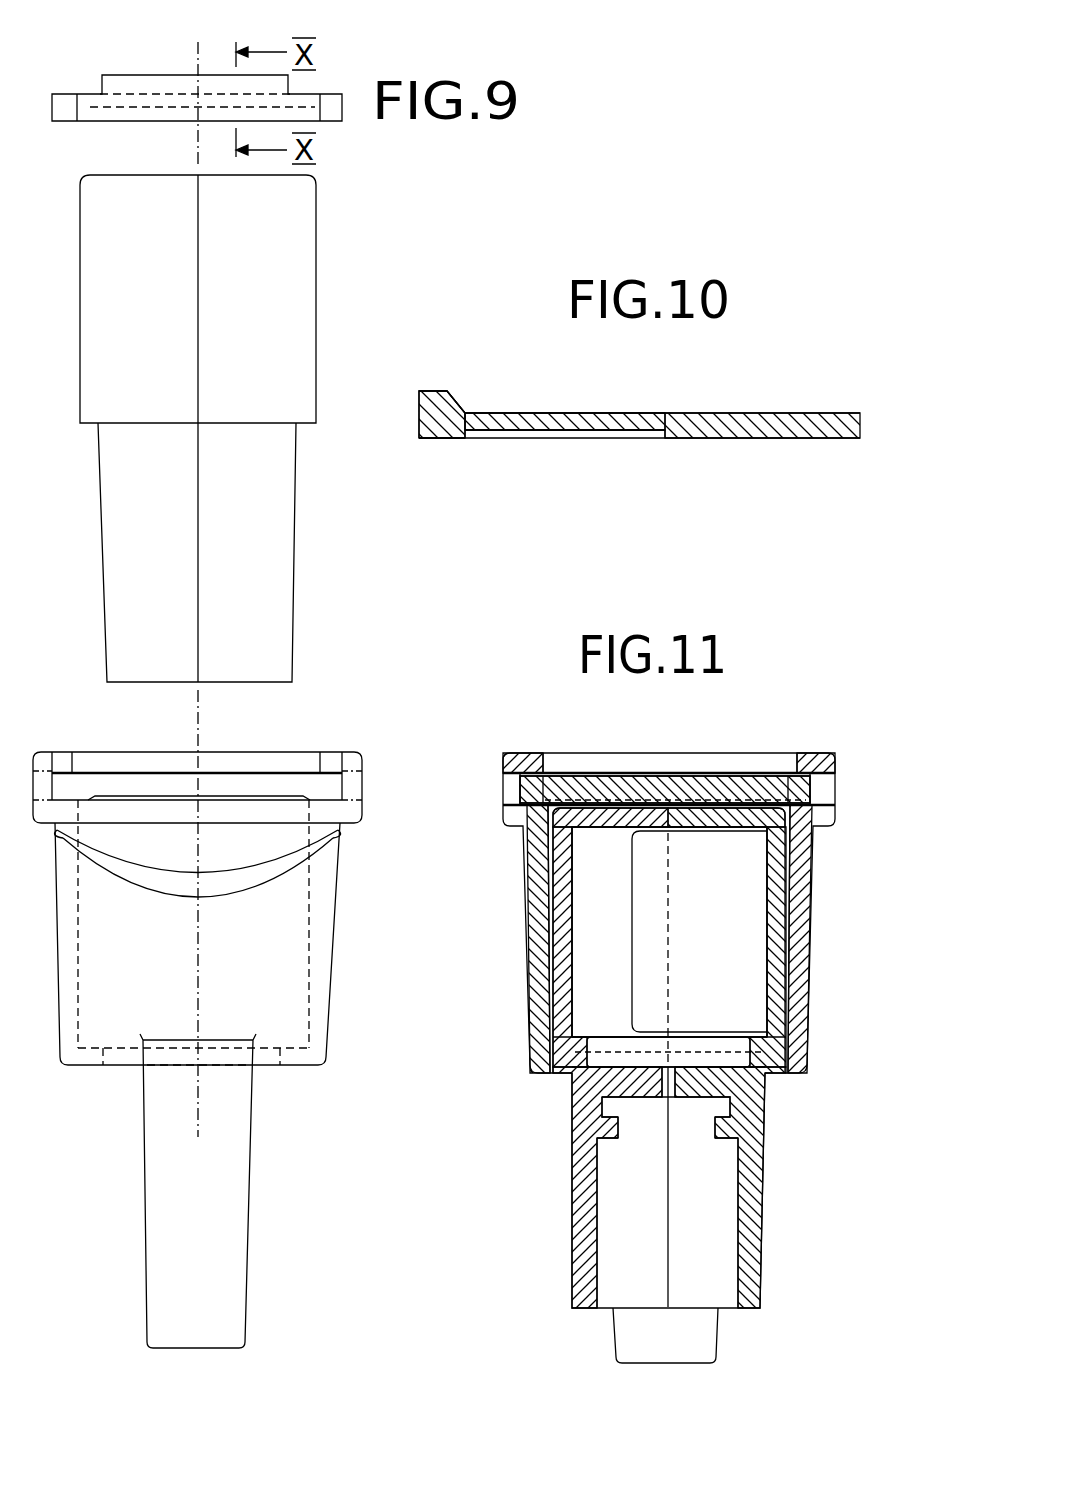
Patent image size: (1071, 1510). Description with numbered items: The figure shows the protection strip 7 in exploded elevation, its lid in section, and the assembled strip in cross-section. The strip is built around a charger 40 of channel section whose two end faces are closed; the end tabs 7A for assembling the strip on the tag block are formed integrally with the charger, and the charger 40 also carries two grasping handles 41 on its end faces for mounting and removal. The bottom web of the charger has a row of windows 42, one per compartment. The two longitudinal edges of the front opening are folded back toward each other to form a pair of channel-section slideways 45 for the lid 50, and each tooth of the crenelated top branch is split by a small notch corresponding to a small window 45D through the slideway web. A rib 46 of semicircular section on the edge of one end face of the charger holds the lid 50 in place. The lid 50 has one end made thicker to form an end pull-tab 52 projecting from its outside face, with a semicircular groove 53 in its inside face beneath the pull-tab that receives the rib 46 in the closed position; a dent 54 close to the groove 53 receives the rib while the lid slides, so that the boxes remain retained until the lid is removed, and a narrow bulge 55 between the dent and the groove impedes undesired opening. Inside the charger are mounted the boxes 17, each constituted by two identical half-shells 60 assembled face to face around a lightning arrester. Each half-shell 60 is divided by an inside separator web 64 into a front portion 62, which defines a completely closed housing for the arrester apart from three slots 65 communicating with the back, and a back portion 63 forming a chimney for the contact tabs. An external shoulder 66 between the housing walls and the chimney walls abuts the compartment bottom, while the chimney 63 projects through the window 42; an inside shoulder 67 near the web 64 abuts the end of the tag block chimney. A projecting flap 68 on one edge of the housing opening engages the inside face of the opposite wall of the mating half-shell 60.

In FIG. 9, the protection strip 7 is at (98, 543).
In FIG. 11, the protection strip 7 is at (815, 993).
In FIG. 9, the end tab 7A is at (155, 1182).
In FIG. 11, the end tab 7A is at (693, 1330).
In FIG. 9, the box 17 is at (317, 334).
In FIG. 11, the box 17 is at (761, 1176).
In FIG. 9, the charger 40 is at (57, 950).
In FIG. 11, the charger 40 is at (793, 1020).
In FIG. 9, the grasping handle 41 is at (233, 878).
In FIG. 9, the window 42 is at (265, 1058).
In FIG. 9, the slideway 45 is at (62, 758).
In FIG. 11, the slideway 45 is at (523, 752).
In FIG. 11, the small window 45D is at (510, 785).
In FIG. 9, the rib 46 is at (230, 802).
In FIG. 9, the lid 50 is at (130, 71).
In FIG. 10, the lid 50 is at (659, 413).
In FIG. 11, the lid 50 is at (668, 776).
In FIG. 10, the end pull-tab 52 is at (433, 390).
In FIG. 10, the semicircular groove 53 is at (440, 440).
In FIG. 10, the dent 54 is at (567, 433).
In FIG. 10, the narrow bulge 55 is at (458, 442).
In FIG. 9, the half-shell 60 is at (223, 293).
In FIG. 11, the half-shell 60 is at (558, 931).
In FIG. 11, the front portion 62 is at (603, 992).
In FIG. 11, the back portion 63 is at (615, 1213).
In FIG. 11, the separator web 64 is at (655, 1093).
In FIG. 11, the slot 65 is at (663, 1092).
In FIG. 11, the external shoulder 66 is at (557, 1077).
In FIG. 11, the inside shoulder 67 is at (612, 1137).
In FIG. 11, the projecting flap 68 is at (632, 942).